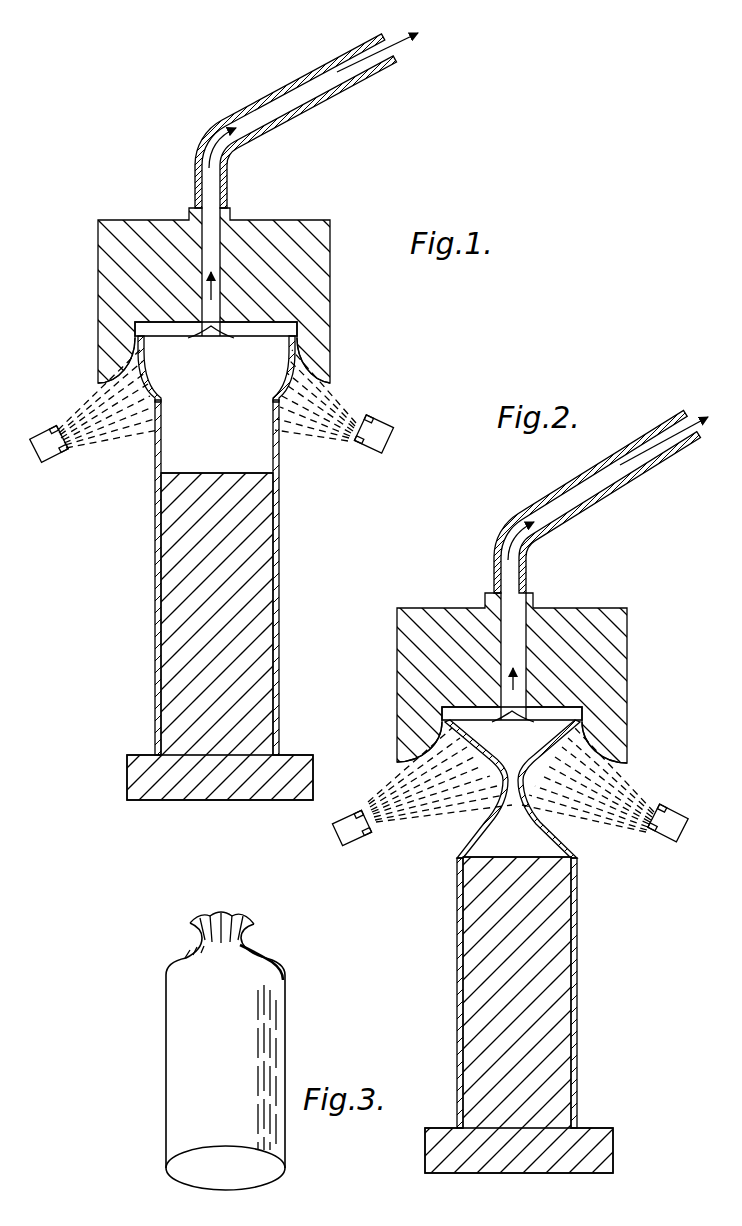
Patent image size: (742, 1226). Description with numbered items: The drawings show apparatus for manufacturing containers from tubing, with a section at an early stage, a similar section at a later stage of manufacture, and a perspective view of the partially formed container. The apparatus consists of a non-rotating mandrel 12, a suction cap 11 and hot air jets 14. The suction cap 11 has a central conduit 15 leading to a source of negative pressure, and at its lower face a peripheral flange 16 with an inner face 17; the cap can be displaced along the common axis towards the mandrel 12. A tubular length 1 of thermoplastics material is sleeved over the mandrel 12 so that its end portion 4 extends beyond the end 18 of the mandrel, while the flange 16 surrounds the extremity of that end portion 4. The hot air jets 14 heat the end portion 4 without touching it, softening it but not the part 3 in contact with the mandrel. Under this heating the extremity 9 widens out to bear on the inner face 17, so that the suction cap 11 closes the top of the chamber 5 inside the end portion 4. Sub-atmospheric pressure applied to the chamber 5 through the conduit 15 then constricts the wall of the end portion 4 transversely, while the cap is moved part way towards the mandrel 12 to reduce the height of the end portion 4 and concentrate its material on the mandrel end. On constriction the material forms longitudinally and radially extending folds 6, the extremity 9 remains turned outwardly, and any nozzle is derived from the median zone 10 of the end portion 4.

In FIG. 1, the tubular length 1 is at (225, 568).
In FIG. 2, the tubular length 1 is at (521, 946).
In FIG. 3, the tubular length 1 is at (244, 1040).
In FIG. 1, the part in contact with the mandrel 3 is at (281, 607).
In FIG. 2, the part in contact with the mandrel 3 is at (580, 1022).
In FIG. 1, the end portion 4 is at (279, 434).
In FIG. 2, the end portion 4 is at (532, 818).
In FIG. 2, the chamber 5 is at (491, 826).
In FIG. 3, the folds 6 is at (248, 979).
In FIG. 1, the extremity 9 is at (288, 348).
In FIG. 3, the extremity 9 is at (205, 919).
In FIG. 1, the median zone 10 is at (275, 408).
In FIG. 3, the median zone 10 is at (228, 948).
In FIG. 1, the suction cap 11 is at (313, 279).
In FIG. 2, the suction cap 11 is at (613, 643).
In FIG. 1, the mandrel 12 is at (230, 727).
In FIG. 2, the mandrel 12 is at (545, 1098).
In FIG. 1, the hot air jets 14 is at (56, 462).
In FIG. 2, the hot air jets 14 is at (361, 834).
In FIG. 1, the central conduit 15 is at (213, 247).
In FIG. 2, the central conduit 15 is at (508, 620).
In FIG. 1, the peripheral flange 16 is at (315, 367).
In FIG. 2, the peripheral flange 16 is at (618, 750).
In FIG. 1, the inner face 17 is at (300, 343).
In FIG. 2, the inner face 17 is at (585, 725).
In FIG. 1, the end of the mandrel 18 is at (220, 473).
In FIG. 2, the end of the mandrel 18 is at (514, 850).